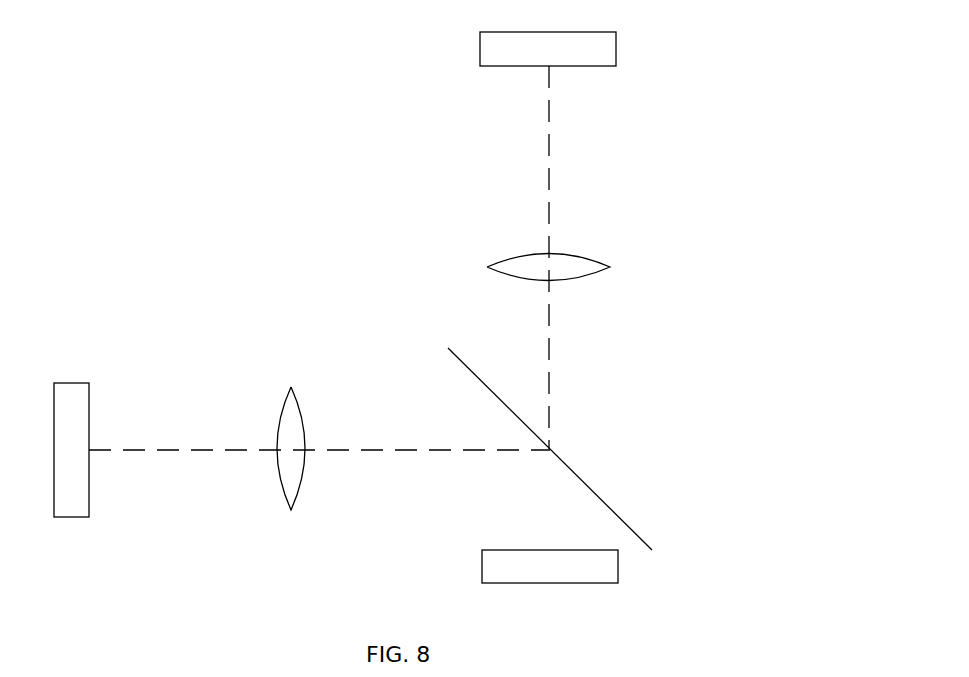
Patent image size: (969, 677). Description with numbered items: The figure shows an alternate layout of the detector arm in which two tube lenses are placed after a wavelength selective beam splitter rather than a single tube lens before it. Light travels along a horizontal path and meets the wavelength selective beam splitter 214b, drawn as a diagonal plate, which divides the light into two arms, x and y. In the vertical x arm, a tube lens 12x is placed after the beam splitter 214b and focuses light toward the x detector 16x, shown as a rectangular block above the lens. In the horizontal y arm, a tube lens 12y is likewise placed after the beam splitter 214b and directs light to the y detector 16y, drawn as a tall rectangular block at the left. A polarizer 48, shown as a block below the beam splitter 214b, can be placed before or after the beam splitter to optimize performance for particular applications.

The detector 16x is at (480, 48).
The tube lens 12x is at (503, 262).
The wavelength selective beam splitter 214b is at (470, 372).
The detector 16y is at (75, 383).
The tube lens 12y is at (287, 395).
The polarizer 48 is at (482, 560).